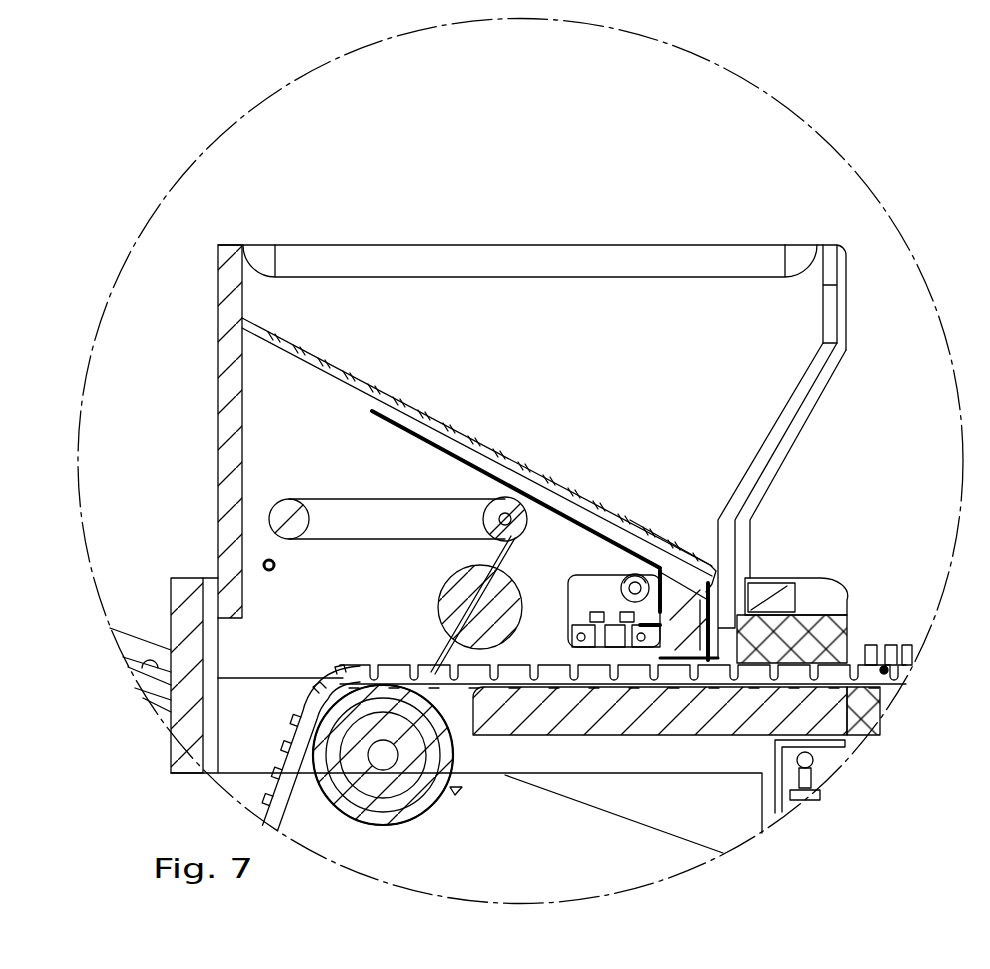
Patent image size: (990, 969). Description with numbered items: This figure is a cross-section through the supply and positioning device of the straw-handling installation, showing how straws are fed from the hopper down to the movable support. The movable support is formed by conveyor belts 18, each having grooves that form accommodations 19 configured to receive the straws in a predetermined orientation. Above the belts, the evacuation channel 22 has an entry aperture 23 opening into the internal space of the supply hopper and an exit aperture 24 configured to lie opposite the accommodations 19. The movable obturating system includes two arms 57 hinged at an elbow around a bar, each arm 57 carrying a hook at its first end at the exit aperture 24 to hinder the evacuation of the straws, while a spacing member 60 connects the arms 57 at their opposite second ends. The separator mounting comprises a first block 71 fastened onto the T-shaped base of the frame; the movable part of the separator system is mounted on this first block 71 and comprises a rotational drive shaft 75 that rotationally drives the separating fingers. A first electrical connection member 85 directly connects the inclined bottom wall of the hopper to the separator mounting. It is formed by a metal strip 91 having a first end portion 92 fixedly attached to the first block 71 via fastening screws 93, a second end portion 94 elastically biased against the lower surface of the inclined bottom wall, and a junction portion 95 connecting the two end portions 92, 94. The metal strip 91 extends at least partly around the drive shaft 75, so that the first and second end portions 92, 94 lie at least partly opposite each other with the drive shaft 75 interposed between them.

The conveyor belt 18 is at (826, 668).
The accommodations 19 is at (770, 657).
The evacuation channel 22 is at (748, 583).
The entry aperture 23 is at (686, 565).
The exit aperture 24 is at (710, 668).
The arm 57 is at (352, 499).
The spacing member 60 is at (290, 512).
The first block 71 is at (489, 621).
The rotational drive shaft 75 is at (628, 575).
The first electrical connection member 85 is at (675, 619).
The metal strip 91 is at (627, 666).
The first end portion 92 is at (568, 603).
The fastening screws 93 is at (588, 575).
The second end portion 94 is at (640, 612).
The junction portion 95 is at (656, 550).